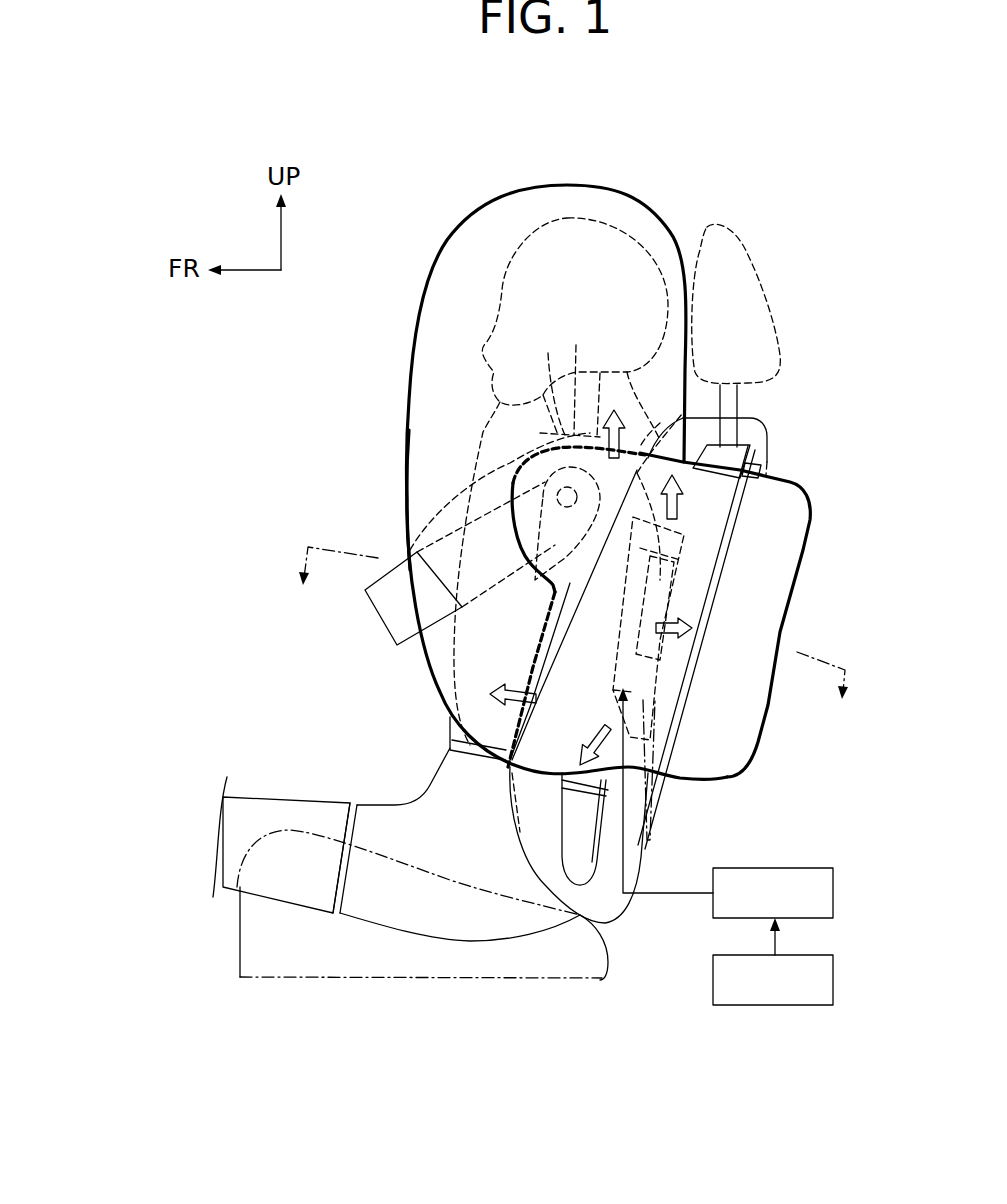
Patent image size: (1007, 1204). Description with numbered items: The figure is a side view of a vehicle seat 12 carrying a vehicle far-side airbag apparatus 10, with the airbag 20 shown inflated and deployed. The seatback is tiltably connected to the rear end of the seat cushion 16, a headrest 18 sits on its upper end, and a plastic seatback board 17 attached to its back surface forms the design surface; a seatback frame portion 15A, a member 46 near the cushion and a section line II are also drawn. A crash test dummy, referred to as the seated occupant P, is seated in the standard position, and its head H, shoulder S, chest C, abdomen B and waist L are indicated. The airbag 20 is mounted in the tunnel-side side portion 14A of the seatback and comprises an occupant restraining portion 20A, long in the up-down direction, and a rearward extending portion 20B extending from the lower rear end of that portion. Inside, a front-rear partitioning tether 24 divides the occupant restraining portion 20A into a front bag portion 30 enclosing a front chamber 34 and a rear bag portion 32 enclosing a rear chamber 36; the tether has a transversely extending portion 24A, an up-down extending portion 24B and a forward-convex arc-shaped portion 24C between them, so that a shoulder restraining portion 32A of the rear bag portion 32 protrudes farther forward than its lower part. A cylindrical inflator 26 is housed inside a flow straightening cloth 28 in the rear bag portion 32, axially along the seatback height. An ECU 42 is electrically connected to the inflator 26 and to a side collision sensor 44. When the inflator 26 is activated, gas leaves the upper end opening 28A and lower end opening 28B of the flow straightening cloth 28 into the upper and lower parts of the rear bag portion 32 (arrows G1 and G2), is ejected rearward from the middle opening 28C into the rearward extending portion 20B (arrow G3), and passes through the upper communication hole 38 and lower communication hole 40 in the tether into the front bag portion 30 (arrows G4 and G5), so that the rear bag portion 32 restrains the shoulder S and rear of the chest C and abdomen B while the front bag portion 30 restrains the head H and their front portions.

The vehicle far-side airbag apparatus 10 is at (323, 384).
The vehicle seat 12 is at (428, 978).
The tunnel-side side portion 14A is at (762, 424).
The seat back frame lower portion 15A is at (637, 787).
The seat cushion 16 is at (333, 979).
The seatback board 17 is at (762, 484).
The headrest 18 is at (773, 300).
The airbag 20 is at (448, 241).
The occupant restraining portion 20A is at (420, 497).
The rearward extending portion 20B is at (742, 720).
The front-rear partitioning tether 24 is at (549, 600).
The transversely extending portion 24A is at (618, 446).
The up-down extending portion 24B is at (520, 737).
The arc-shaped portion 24C is at (522, 470).
The inflator 26 is at (625, 614).
The flow straightening cloth 28 is at (688, 598).
The upper end opening 28A is at (683, 522).
The lower end opening 28B is at (640, 733).
The middle opening 28C is at (660, 650).
The front bag portion 30 is at (446, 325).
The rear bag portion 32 is at (770, 565).
The shoulder restraining portion 32A is at (505, 502).
The front chamber 34 is at (446, 360).
The rear chamber 36 is at (768, 590).
The upper communication hole 38 is at (600, 343).
The lower communication hole 40 is at (589, 658).
The ECU 42 is at (713, 909).
The side collision sensor 44 is at (713, 991).
The seat cushion frame 46 is at (520, 828).
The head H is at (503, 286).
The shoulder S is at (553, 388).
The abdomen B is at (438, 682).
The chest C is at (415, 560).
The crash test dummy P is at (305, 793).
The waist L is at (470, 803).
The arrow G1 is at (683, 489).
The arrow G2 is at (597, 730).
The arrow G3 is at (703, 628).
The arrow G4 is at (617, 410).
The arrow G5 is at (505, 690).
The section line II- II is at (572, 638).